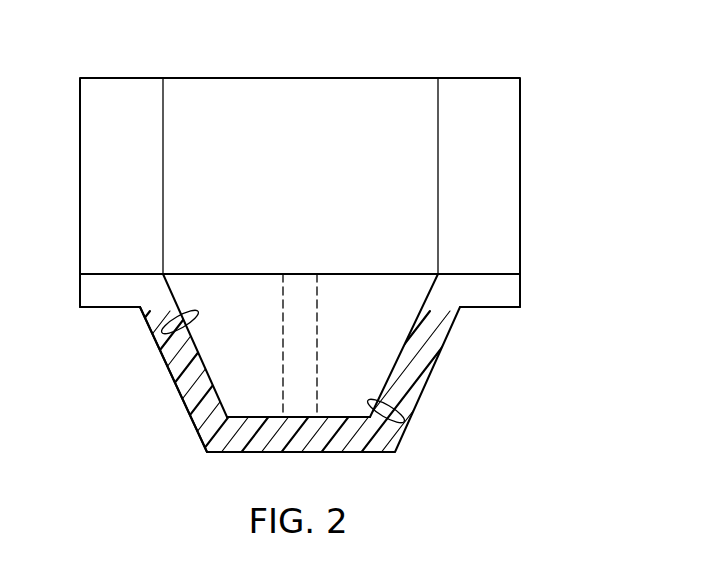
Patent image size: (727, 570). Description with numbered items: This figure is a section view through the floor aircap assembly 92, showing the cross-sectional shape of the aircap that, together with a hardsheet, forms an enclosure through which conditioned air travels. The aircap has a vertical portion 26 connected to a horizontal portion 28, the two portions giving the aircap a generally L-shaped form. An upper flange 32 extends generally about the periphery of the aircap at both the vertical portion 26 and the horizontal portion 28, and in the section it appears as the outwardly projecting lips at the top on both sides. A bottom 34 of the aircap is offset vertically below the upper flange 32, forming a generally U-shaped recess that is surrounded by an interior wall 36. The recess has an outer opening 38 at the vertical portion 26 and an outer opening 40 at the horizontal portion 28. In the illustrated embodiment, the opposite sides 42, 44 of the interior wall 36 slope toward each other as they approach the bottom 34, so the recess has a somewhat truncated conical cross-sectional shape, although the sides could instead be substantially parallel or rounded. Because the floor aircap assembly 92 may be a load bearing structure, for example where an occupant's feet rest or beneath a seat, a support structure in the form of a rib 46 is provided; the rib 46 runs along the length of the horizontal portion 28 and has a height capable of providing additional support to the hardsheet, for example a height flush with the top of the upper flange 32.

The crucible assembly 92 is at (540, 159).
The vertical portion 26 is at (255, 92).
The outer opening 38 is at (198, 98).
The horizontal portion 28 is at (417, 377).
The upper flange 32 is at (95, 193).
The interior wall 36 is at (192, 403).
The bottom 34 is at (298, 416).
The opposite side 42 is at (172, 333).
The opposite side 44 is at (402, 421).
The outer opening 40 is at (271, 296).
The rib 46 is at (318, 323).